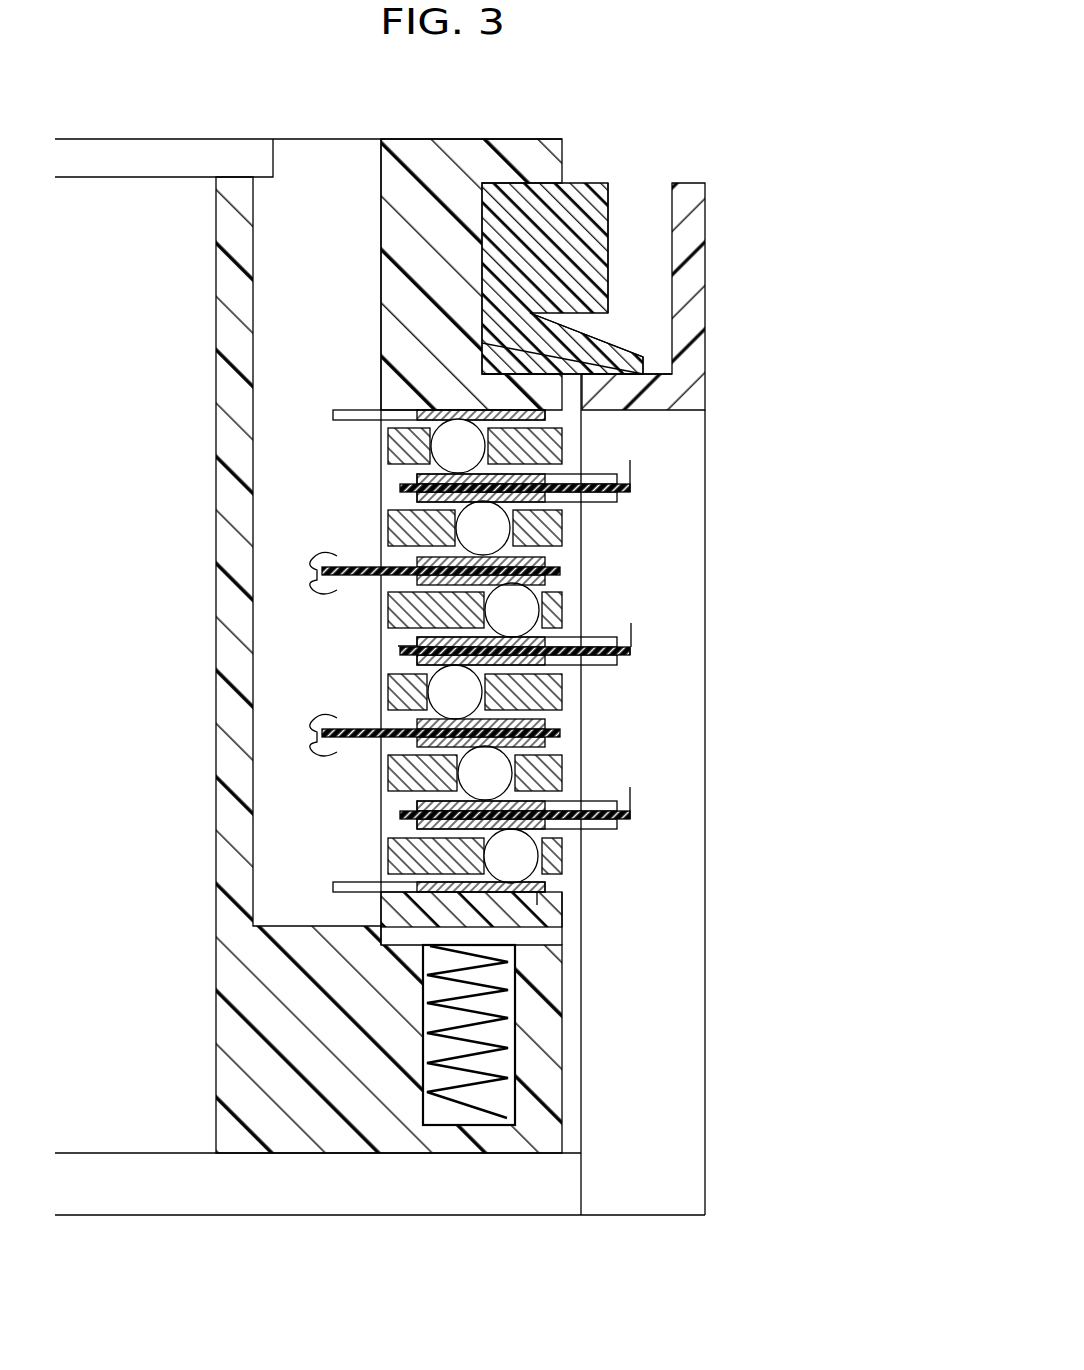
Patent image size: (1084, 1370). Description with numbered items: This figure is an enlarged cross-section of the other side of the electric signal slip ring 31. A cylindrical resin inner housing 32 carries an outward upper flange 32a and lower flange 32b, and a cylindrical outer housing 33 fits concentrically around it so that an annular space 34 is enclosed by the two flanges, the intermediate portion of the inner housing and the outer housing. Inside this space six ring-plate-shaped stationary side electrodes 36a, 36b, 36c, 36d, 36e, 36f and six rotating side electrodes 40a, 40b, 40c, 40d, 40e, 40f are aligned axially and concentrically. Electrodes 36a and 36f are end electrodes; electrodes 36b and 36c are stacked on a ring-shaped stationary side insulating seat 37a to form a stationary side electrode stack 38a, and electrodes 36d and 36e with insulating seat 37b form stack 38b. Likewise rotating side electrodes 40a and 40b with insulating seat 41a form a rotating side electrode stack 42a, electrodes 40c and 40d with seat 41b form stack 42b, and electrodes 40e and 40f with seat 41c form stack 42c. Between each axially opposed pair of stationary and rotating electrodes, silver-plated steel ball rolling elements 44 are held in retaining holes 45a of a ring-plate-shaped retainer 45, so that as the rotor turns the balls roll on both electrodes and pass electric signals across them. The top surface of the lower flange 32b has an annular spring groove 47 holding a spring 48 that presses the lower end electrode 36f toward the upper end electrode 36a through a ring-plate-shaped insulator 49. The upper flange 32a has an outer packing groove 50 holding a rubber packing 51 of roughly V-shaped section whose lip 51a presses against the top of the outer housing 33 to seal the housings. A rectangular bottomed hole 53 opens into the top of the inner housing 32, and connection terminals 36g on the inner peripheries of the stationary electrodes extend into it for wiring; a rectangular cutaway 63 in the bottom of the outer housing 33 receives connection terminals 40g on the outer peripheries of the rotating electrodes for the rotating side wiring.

The electric signal slip ring 31 is at (108, 93).
The inner housing 32 is at (216, 640).
The upper flange 32a is at (532, 158).
The lower flange 32b is at (406, 1143).
The outer housing 33 is at (707, 318).
The annular space 34 is at (756, 579).
The stationary side electrode 36a is at (400, 400).
The stationary side electrode 36b is at (430, 553).
The stationary side electrode 36c is at (392, 607).
The stationary side electrode 36d is at (430, 719).
The stationary side electrode 36e is at (395, 778).
The stationary side electrode 36f is at (430, 882).
The connection terminal 36g is at (299, 646).
The stationary side insulating seat 37a is at (565, 578).
The stationary side insulating seat 37b is at (565, 739).
The stationary side electrode stack 38a is at (560, 571).
The stationary side electrode stack 38b is at (560, 733).
The rotating side electrode 40a is at (545, 477).
The rotating side electrode 40b is at (545, 500).
The rotating side electrode 40c is at (545, 638).
The rotating side electrode 40d is at (545, 664).
The rotating side electrode 40e is at (545, 802).
The rotating side electrode 40f is at (545, 829).
The connection terminal 40g is at (642, 472).
The rotating side insulating seat 41a is at (632, 487).
The rotating side insulating seat 41b is at (632, 650).
The rotating side insulating seat 41c is at (630, 814).
The rotating side electrode stack 42a is at (632, 490).
The rotating side electrode stack 42b is at (632, 654).
The rotating side electrode stack 42c is at (632, 818).
The rolling element 44 is at (438, 445).
The retainer 45 is at (395, 455).
The retaining hole 45a is at (400, 646).
The spring groove 47 is at (472, 1132).
The spring 48 is at (500, 1080).
The insulator 49 is at (540, 915).
The packing groove 50 is at (482, 218).
The packing 51 is at (612, 215).
The lip 51a is at (627, 347).
The bottomed hole 53 is at (330, 154).
The cutaway 63 is at (682, 1076).